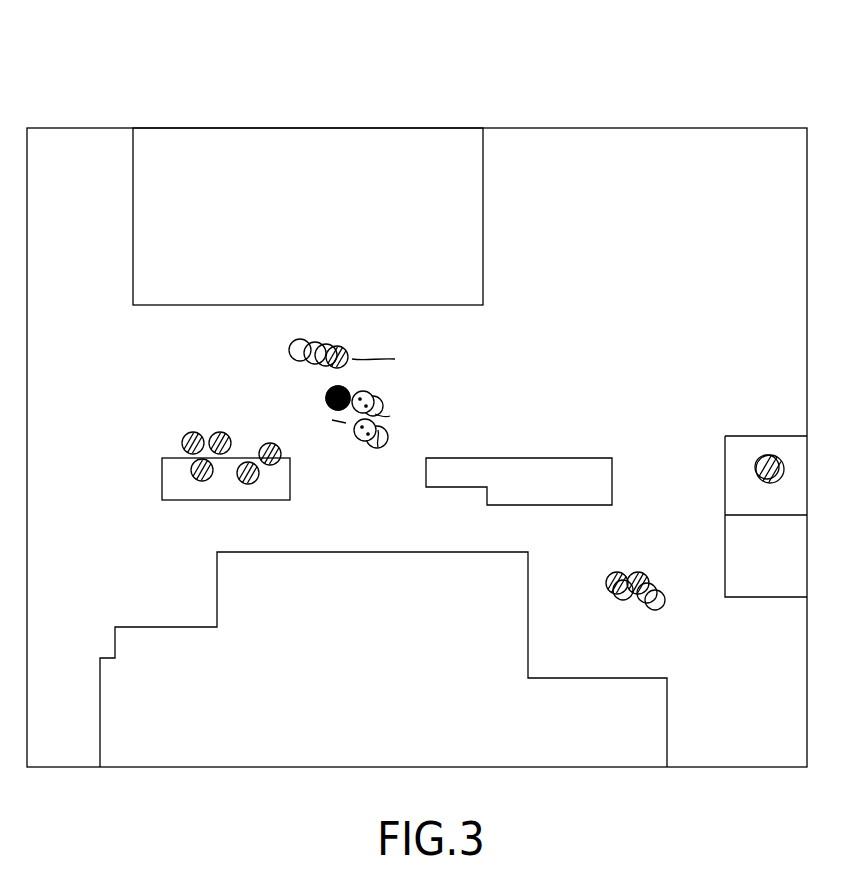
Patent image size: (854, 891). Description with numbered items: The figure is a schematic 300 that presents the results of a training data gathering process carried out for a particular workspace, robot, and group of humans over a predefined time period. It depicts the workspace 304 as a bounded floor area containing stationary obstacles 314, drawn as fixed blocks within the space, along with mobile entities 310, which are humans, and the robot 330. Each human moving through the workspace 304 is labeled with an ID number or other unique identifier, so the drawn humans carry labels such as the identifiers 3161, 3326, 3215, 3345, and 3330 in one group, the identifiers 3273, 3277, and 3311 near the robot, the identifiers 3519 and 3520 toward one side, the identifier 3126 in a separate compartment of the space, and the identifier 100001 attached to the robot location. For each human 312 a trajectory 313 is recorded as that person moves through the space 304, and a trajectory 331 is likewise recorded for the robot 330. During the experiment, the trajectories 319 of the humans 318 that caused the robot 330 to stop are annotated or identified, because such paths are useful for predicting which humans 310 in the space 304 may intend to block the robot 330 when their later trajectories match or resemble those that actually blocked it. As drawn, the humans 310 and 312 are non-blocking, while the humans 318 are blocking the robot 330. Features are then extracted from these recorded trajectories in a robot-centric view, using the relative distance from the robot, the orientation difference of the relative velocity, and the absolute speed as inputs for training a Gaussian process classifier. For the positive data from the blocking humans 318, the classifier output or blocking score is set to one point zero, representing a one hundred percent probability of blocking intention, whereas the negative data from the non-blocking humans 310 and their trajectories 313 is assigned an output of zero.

The schematic 300 is at (594, 85).
The workspace 304 is at (577, 384).
The mobile entities 310 is at (191, 469).
The human 312 is at (349, 352).
The trajectory 313 is at (290, 350).
The stationary obstacles 314 is at (207, 499).
The humans 318 is at (376, 415).
The trajectories 319 is at (372, 405).
The robot 330 is at (326, 398).
The trajectory 331 is at (336, 420).
The mounting hole 3126 is at (776, 483).
The mounting hole 3161 is at (180, 432).
The mounting hole 3215 is at (281, 442).
The mounting hole 3273 is at (349, 344).
The component 3277 is at (367, 390).
The component 3311 is at (393, 433).
The mounting hole 3326 is at (228, 432).
The mounting hole 3330 is at (271, 480).
The mounting hole 3345 is at (179, 479).
The mounting hole 3519 is at (592, 595).
The mounting hole 3520 is at (658, 581).
The reference marker 100001 is at (308, 390).